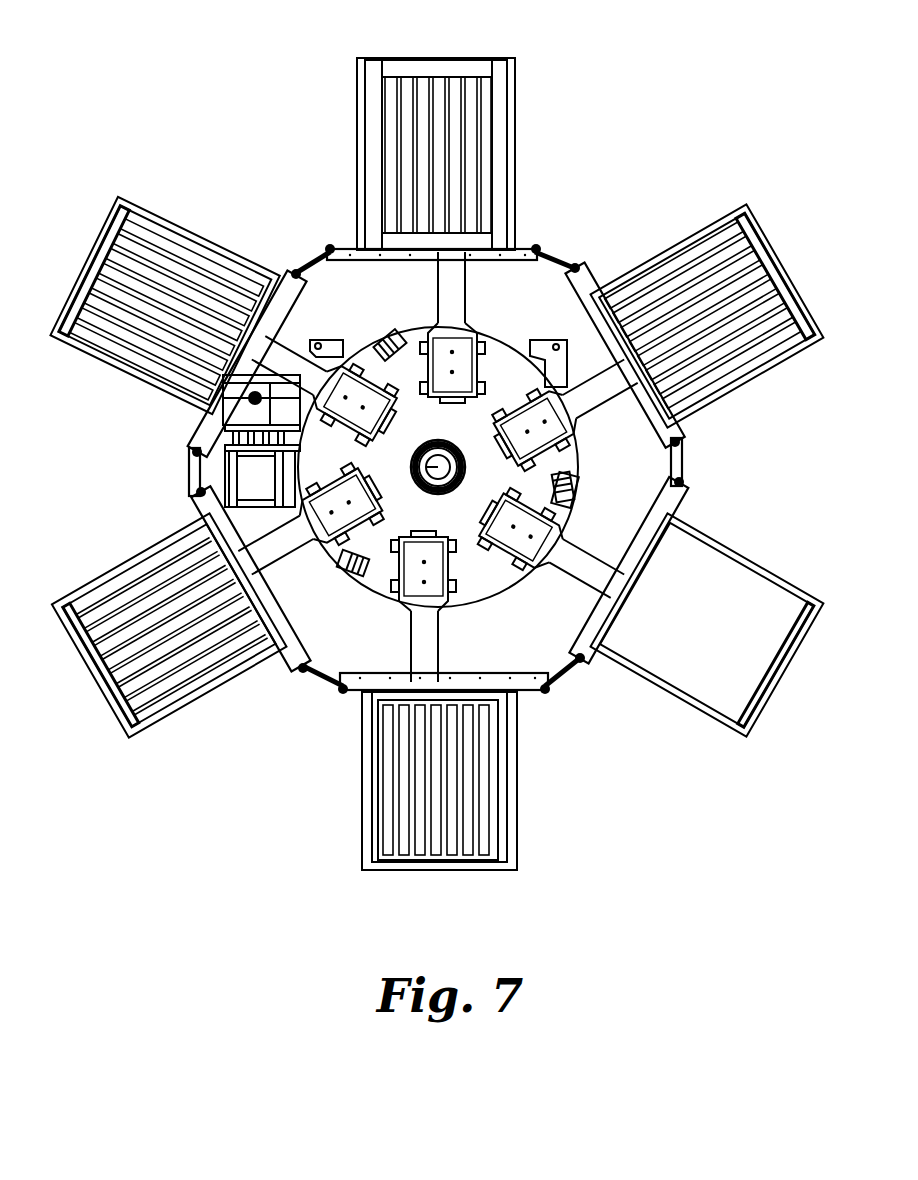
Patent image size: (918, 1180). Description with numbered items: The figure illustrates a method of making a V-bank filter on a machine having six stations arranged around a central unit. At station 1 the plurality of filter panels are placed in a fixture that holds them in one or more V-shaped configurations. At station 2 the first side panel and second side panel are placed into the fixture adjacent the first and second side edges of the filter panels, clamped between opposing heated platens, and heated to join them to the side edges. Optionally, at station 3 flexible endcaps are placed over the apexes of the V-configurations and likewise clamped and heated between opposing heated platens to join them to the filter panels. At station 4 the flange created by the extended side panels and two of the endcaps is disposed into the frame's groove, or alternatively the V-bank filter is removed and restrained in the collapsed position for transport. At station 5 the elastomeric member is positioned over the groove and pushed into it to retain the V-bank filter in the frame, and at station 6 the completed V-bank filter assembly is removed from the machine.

The station 1 is at (439, 809).
The station 2 is at (161, 625).
The station 3 is at (160, 305).
The station 4 is at (436, 128).
The station 5 is at (715, 315).
The station 6 is at (715, 624).